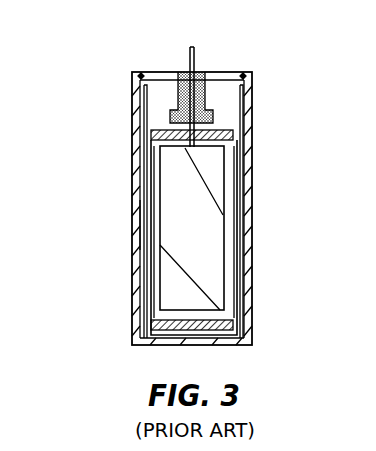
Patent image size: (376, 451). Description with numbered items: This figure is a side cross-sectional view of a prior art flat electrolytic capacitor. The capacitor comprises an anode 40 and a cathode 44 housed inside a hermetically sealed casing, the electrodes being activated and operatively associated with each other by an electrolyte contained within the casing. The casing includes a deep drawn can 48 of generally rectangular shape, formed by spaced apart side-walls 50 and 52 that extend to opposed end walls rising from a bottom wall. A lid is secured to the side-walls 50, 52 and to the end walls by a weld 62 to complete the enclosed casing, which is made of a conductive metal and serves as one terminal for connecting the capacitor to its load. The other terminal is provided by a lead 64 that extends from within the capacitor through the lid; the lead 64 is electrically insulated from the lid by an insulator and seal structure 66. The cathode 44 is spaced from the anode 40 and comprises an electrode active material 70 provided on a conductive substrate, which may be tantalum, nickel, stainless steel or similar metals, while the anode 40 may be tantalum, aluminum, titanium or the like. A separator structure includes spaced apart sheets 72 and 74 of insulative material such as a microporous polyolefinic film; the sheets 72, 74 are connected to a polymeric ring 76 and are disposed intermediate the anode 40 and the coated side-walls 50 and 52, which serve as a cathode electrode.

The anode 40 is at (182, 291).
The cathode 44 is at (135, 92).
The deep drawn can 48 is at (137, 130).
The side-wall 50 is at (250, 232).
The side-wall 52 is at (149, 172).
The weld 62 is at (141, 73).
The lead 64 is at (196, 50).
The insulator and seal structure 66 is at (184, 72).
The electrode active material 70 is at (141, 228).
The separator sheet 72 is at (232, 290).
The separator sheet 74 is at (153, 295).
The polymeric ring 76 is at (235, 135).